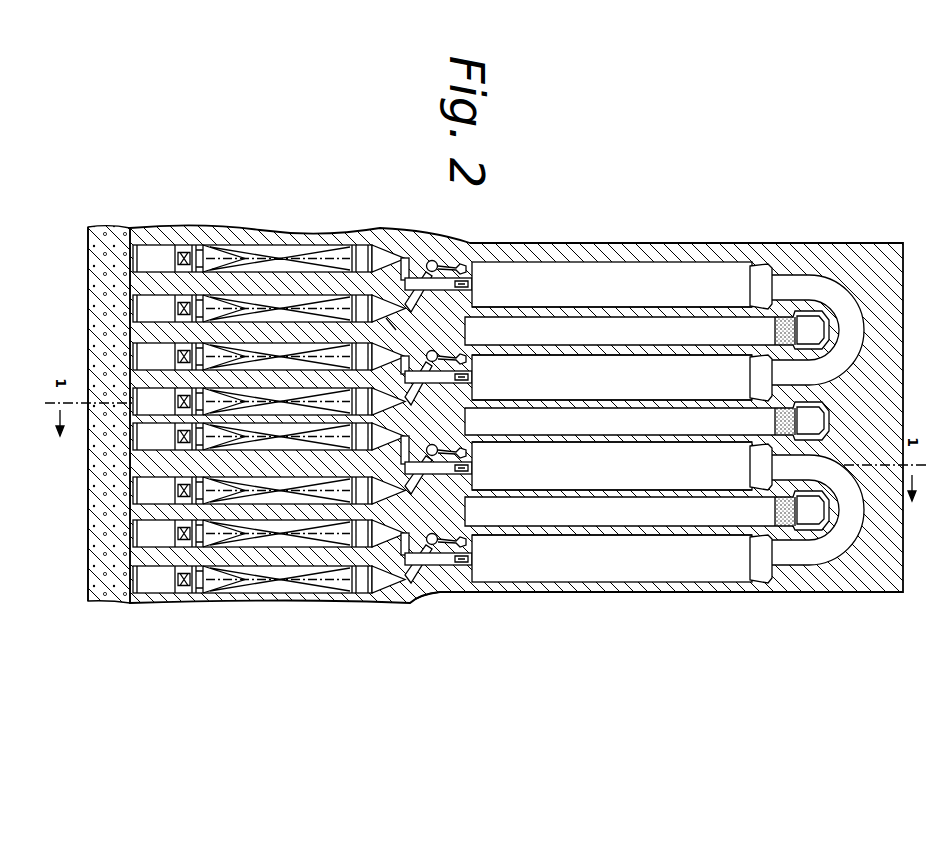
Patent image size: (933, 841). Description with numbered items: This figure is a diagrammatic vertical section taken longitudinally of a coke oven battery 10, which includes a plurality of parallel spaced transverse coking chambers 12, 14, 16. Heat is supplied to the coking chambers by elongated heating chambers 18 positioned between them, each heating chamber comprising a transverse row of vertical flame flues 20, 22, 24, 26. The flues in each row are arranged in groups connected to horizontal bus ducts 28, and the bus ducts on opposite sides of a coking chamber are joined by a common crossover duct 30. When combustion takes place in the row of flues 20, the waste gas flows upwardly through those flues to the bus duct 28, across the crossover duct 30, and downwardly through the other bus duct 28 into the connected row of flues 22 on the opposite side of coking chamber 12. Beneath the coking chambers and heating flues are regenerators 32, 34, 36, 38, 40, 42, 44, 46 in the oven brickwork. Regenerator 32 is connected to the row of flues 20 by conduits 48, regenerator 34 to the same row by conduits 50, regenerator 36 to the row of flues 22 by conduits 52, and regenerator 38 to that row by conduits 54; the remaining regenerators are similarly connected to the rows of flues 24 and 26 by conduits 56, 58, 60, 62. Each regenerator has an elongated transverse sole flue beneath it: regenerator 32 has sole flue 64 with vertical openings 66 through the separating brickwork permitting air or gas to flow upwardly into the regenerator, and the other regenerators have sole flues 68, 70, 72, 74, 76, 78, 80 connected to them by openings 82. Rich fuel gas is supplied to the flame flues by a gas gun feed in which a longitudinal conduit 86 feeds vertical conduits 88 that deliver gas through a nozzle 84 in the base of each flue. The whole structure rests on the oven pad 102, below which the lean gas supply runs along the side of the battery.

The coke oven battery 10 is at (836, 598).
The coking chamber 12 is at (682, 322).
The coking chamber 14 is at (675, 412).
The coking chamber 16 is at (675, 502).
The heating chamber 18 is at (596, 253).
The transverse row of vertical flame flues 20 is at (620, 275).
The transverse row of vertical flame flues 22 is at (620, 367).
The transverse row of vertical flame flues 24 is at (620, 460).
The transverse row of vertical flame flues 26 is at (620, 549).
The horizontal bus duct 28 is at (761, 423).
The crossover duct 30 is at (845, 356).
The regenerator 32 is at (269, 258).
The regenerator 34 is at (269, 308).
The regenerator 36 is at (269, 356).
The regenerator 38 is at (269, 401).
The regenerator 40 is at (269, 436).
The regenerator 42 is at (269, 490).
The regenerator 44 is at (269, 533).
The regenerator 46 is at (269, 579).
The conduits 48 is at (410, 267).
The conduits 50 is at (418, 292).
The conduits 52 is at (404, 328).
The conduits 54 is at (416, 380).
The conduits 56 is at (409, 448).
The conduits 58 is at (418, 476).
The conduits 60 is at (416, 545).
The conduits 62 is at (418, 602).
The sole flue 64 is at (139, 251).
The vertical openings 66 is at (178, 256).
The sole flue 68 is at (139, 301).
The sole flue 70 is at (139, 349).
The sole flue 72 is at (139, 394).
The sole flue 74 is at (139, 429).
The sole flue 76 is at (139, 483).
The sole flue 78 is at (139, 526).
The sole flue 80 is at (139, 572).
The openings 82 is at (187, 618).
The nozzle 84 is at (474, 282).
The longitudinal conduit 86 is at (432, 260).
The vertical conduits 88 is at (458, 262).
The oven pad 102 is at (88, 514).